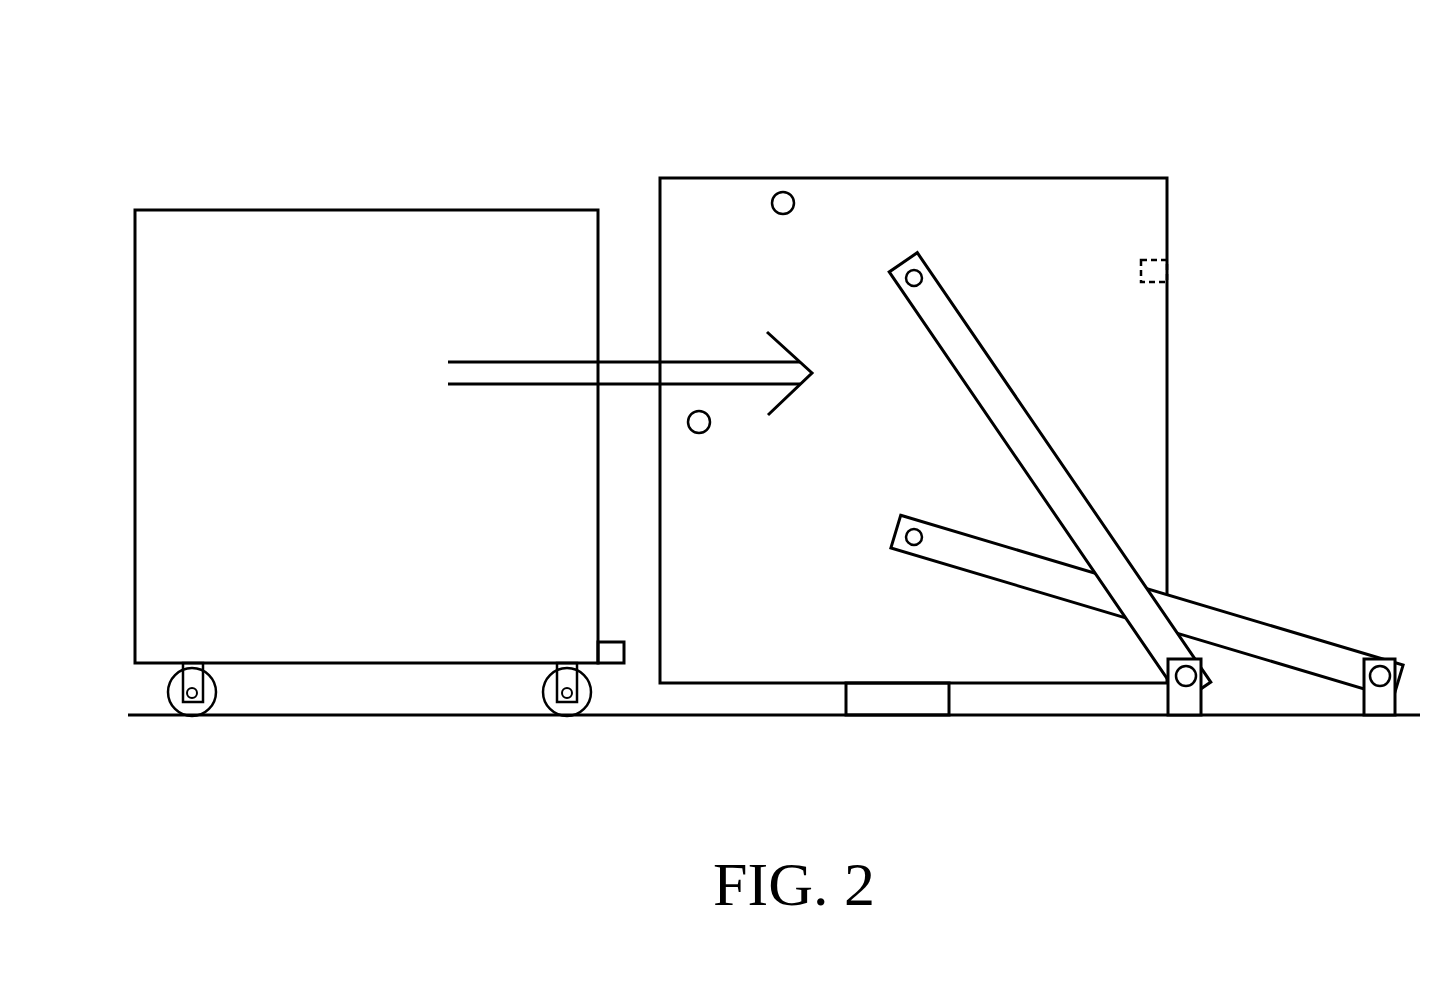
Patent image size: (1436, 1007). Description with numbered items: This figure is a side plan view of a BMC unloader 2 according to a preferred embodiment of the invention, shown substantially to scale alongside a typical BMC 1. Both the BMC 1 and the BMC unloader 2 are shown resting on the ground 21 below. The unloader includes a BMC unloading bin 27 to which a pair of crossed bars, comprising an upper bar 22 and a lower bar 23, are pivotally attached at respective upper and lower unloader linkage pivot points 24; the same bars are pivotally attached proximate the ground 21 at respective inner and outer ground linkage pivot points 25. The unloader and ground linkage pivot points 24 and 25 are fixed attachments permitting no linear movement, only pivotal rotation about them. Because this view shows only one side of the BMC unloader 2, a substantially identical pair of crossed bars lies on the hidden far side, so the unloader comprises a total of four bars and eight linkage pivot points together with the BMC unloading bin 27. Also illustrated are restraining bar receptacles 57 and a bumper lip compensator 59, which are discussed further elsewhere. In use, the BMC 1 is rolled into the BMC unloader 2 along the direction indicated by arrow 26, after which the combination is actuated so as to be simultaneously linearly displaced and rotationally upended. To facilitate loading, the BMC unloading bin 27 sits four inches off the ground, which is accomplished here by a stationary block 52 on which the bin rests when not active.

The BMC 1 is at (379, 463).
The BMC unloader 2 is at (913, 389).
The ground 21 is at (646, 717).
The upper bar 22 is at (1022, 433).
The lower bar 23 is at (1233, 633).
The unloader linkage pivot points 24 is at (913, 528).
The ground linkage pivot points 25 is at (1380, 686).
The arrow 26 is at (640, 372).
The BMC unloading bin 27 is at (1020, 282).
The stationary block 52 is at (890, 705).
The restraining bar receptacles 57 is at (699, 420).
The bumper lip compensator 59 is at (1153, 270).